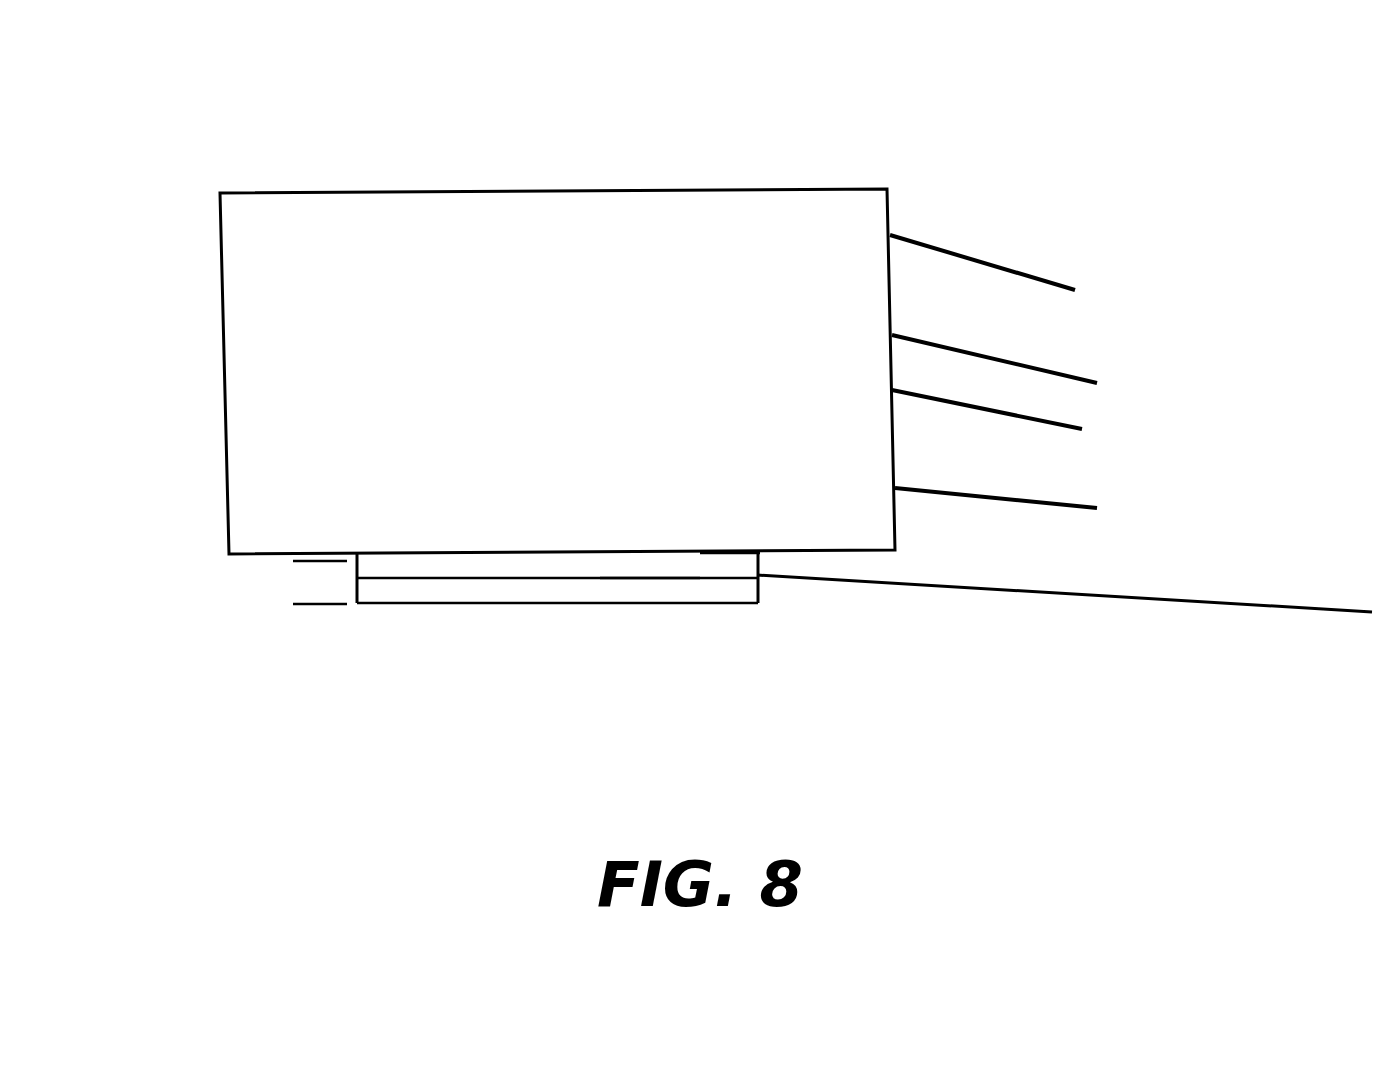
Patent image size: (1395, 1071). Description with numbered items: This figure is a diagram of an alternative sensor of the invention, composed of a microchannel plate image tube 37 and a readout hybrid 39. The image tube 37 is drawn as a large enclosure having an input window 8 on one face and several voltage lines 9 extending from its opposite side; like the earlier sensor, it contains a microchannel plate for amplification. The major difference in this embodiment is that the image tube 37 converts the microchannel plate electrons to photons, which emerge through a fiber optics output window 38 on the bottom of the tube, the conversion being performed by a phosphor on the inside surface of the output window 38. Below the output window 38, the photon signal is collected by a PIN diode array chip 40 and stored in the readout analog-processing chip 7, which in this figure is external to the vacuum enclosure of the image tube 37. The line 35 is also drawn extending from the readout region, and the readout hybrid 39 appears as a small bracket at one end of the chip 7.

The input window 8 is at (430, 204).
The microchannel plate image tube 37 is at (836, 227).
The voltage lines 9 is at (1081, 485).
The readout analog-processing chip 7 is at (502, 602).
The readout hybrid 39 is at (286, 592).
The PIN diode array chip 40 is at (670, 583).
The fiber optics output window 38 is at (734, 565).
The lead line 35 is at (1229, 624).